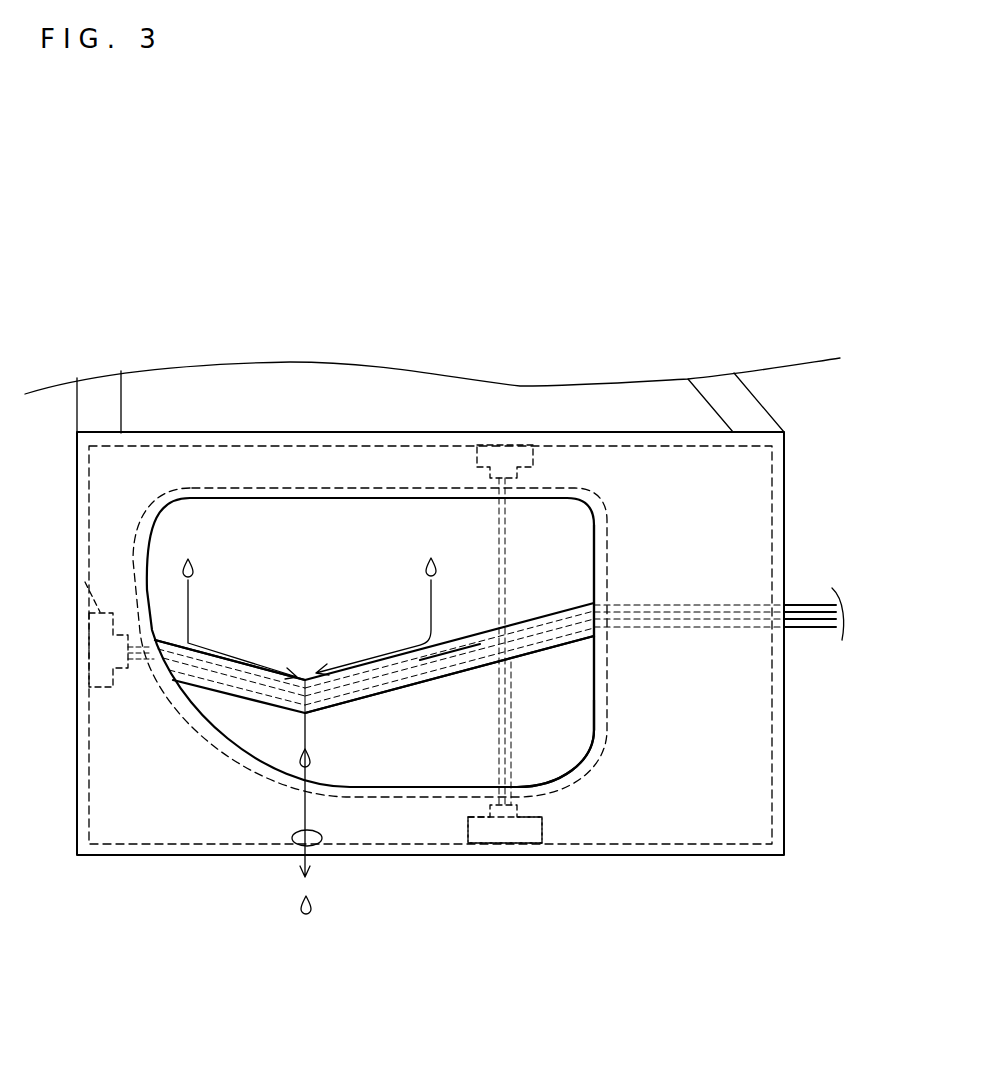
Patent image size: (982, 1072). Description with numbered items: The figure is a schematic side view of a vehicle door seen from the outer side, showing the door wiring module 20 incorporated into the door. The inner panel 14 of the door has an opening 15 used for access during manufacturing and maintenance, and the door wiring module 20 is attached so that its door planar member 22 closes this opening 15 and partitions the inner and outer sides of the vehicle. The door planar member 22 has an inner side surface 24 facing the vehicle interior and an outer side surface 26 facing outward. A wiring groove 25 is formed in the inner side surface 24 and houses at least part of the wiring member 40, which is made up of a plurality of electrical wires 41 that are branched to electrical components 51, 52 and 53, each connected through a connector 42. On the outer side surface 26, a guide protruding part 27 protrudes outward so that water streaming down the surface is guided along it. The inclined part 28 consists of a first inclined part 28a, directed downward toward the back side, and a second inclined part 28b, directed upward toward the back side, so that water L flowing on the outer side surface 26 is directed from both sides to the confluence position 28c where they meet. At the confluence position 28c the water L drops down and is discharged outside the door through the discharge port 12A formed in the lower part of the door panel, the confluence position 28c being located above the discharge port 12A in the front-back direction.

The door wiring module 20 is at (787, 509).
The inner panel 14 is at (708, 826).
The door planar member 22 is at (578, 525).
The inner side surface 24 is at (580, 561).
The outer side surface 26 is at (580, 592).
The opening 15 is at (583, 707).
The inclined part 28 is at (361, 723).
The first inclined part 28a is at (327, 711).
The second inclined part 28b is at (237, 688).
The confluence position 28c is at (305, 680).
The guide protruding part 27 is at (380, 697).
The wiring groove 25 is at (242, 662).
The electrical wires 41 is at (500, 691).
The water L is at (440, 568).
The electrical component 51 is at (477, 455).
The connector 42 is at (533, 470).
The electrical component 52 is at (80, 580).
The electrical component 53 is at (462, 833).
The wiring member 40 is at (803, 599).
The discharge port 12A is at (323, 835).